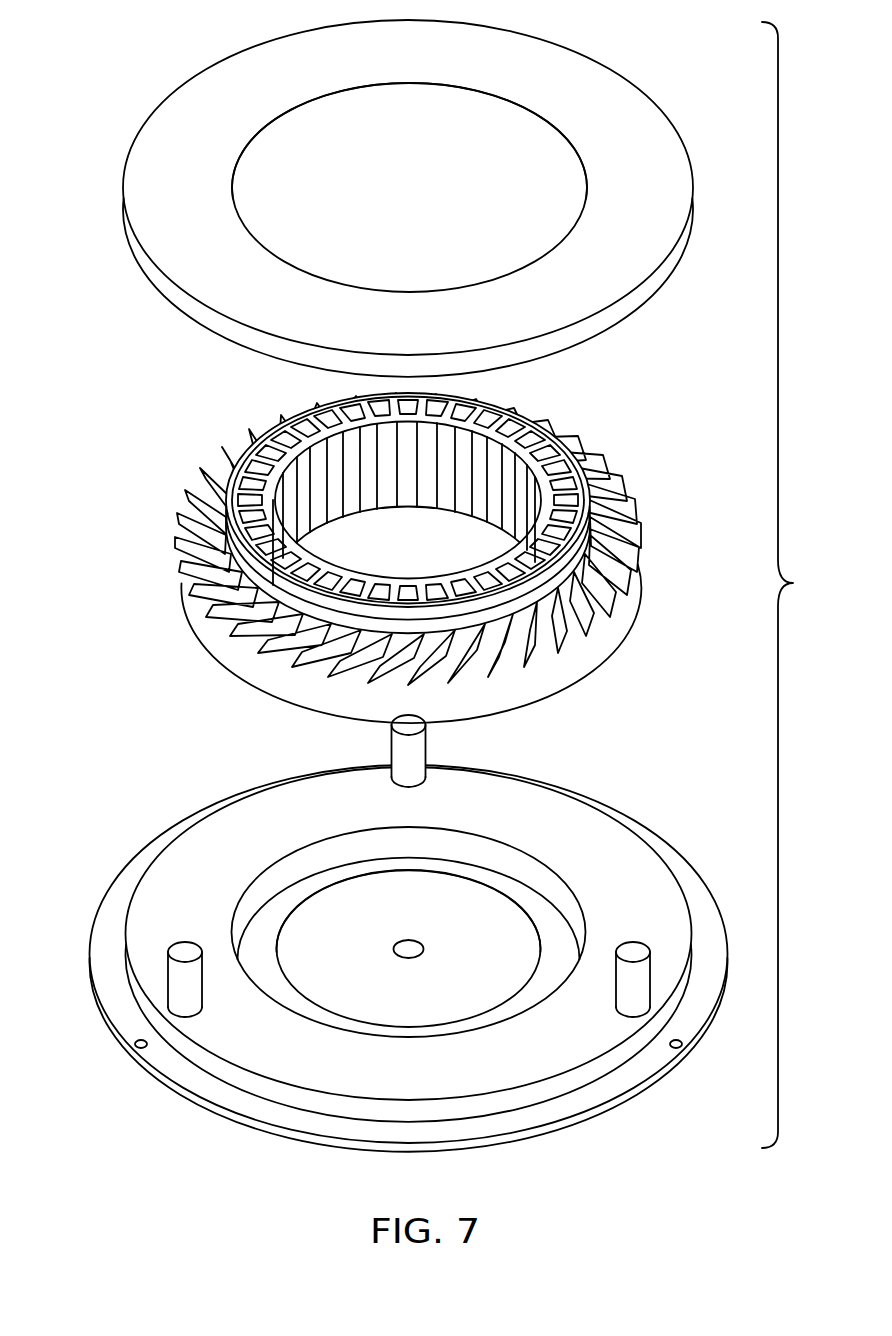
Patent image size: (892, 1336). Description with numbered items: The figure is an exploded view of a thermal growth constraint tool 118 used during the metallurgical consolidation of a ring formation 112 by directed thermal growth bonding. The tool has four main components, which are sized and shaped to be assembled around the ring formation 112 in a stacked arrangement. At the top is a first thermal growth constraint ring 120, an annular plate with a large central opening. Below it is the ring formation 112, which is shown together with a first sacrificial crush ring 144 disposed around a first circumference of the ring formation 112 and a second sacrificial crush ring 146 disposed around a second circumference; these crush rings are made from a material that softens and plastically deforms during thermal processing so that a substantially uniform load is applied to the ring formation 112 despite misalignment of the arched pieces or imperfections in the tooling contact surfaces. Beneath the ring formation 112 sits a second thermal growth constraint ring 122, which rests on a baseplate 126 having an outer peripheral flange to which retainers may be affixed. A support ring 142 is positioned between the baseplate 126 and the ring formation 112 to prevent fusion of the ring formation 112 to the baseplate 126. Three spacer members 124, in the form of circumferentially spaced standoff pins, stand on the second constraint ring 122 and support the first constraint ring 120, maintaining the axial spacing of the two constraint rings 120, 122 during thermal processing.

The thermal growth constraint tool 118 is at (800, 585).
The first thermal growth constraint ring 120 is at (182, 70).
The ring formation 112 is at (390, 558).
The first sacrificial crush ring 144 is at (575, 552).
The second sacrificial crush ring 146 is at (497, 675).
The second thermal growth constraint ring 122 is at (375, 958).
The baseplate 126 is at (92, 933).
The support ring 142 is at (347, 862).
The spacer members 124 is at (398, 745).